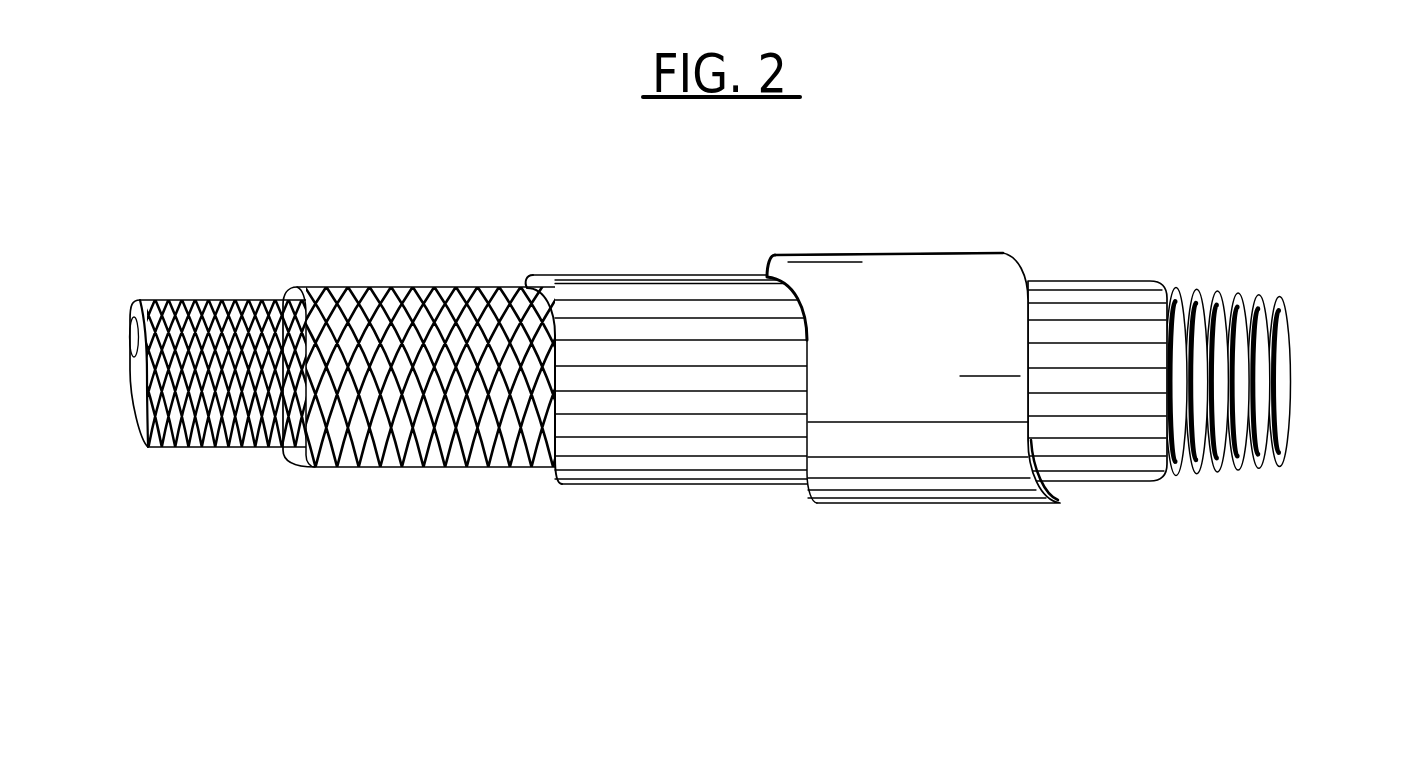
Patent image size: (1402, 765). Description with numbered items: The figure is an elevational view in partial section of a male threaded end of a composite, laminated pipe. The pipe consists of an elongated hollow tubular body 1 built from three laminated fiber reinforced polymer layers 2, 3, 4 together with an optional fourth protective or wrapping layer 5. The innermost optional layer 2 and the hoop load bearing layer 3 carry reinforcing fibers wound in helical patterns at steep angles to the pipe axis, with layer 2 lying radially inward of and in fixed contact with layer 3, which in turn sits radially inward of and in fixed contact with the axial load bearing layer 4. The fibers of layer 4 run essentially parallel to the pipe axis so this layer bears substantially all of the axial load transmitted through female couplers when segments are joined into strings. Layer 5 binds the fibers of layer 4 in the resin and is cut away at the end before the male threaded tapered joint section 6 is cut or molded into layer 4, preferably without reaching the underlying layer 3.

The elongated hollow tubular body 1 is at (1283, 667).
The fiber reinforced polymer layer 2 is at (238, 448).
The hoop load bearing layer 3 is at (444, 468).
The axial load bearing layer 4 is at (687, 484).
The protective or wrapping layer 5 is at (926, 504).
The male threaded tapered joint section 6 is at (1292, 372).